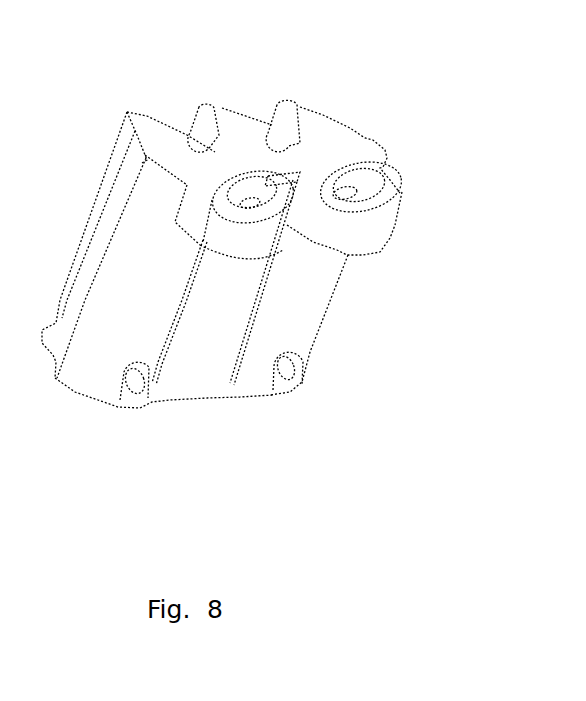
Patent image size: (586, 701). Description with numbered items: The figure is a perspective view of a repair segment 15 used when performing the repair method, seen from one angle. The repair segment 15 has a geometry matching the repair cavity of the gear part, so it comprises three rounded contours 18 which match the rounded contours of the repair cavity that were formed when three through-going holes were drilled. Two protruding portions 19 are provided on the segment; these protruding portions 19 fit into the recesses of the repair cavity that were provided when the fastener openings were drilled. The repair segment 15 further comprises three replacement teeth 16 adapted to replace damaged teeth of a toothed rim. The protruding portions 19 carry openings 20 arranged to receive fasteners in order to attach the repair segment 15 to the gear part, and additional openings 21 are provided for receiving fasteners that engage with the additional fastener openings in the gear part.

The repair segment 15 is at (435, 260).
The replacement teeth 16 is at (295, 108).
The rounded contours 18 is at (267, 342).
The protruding portions 19 is at (306, 259).
The openings 20 is at (243, 196).
The additional openings 21 is at (137, 383).